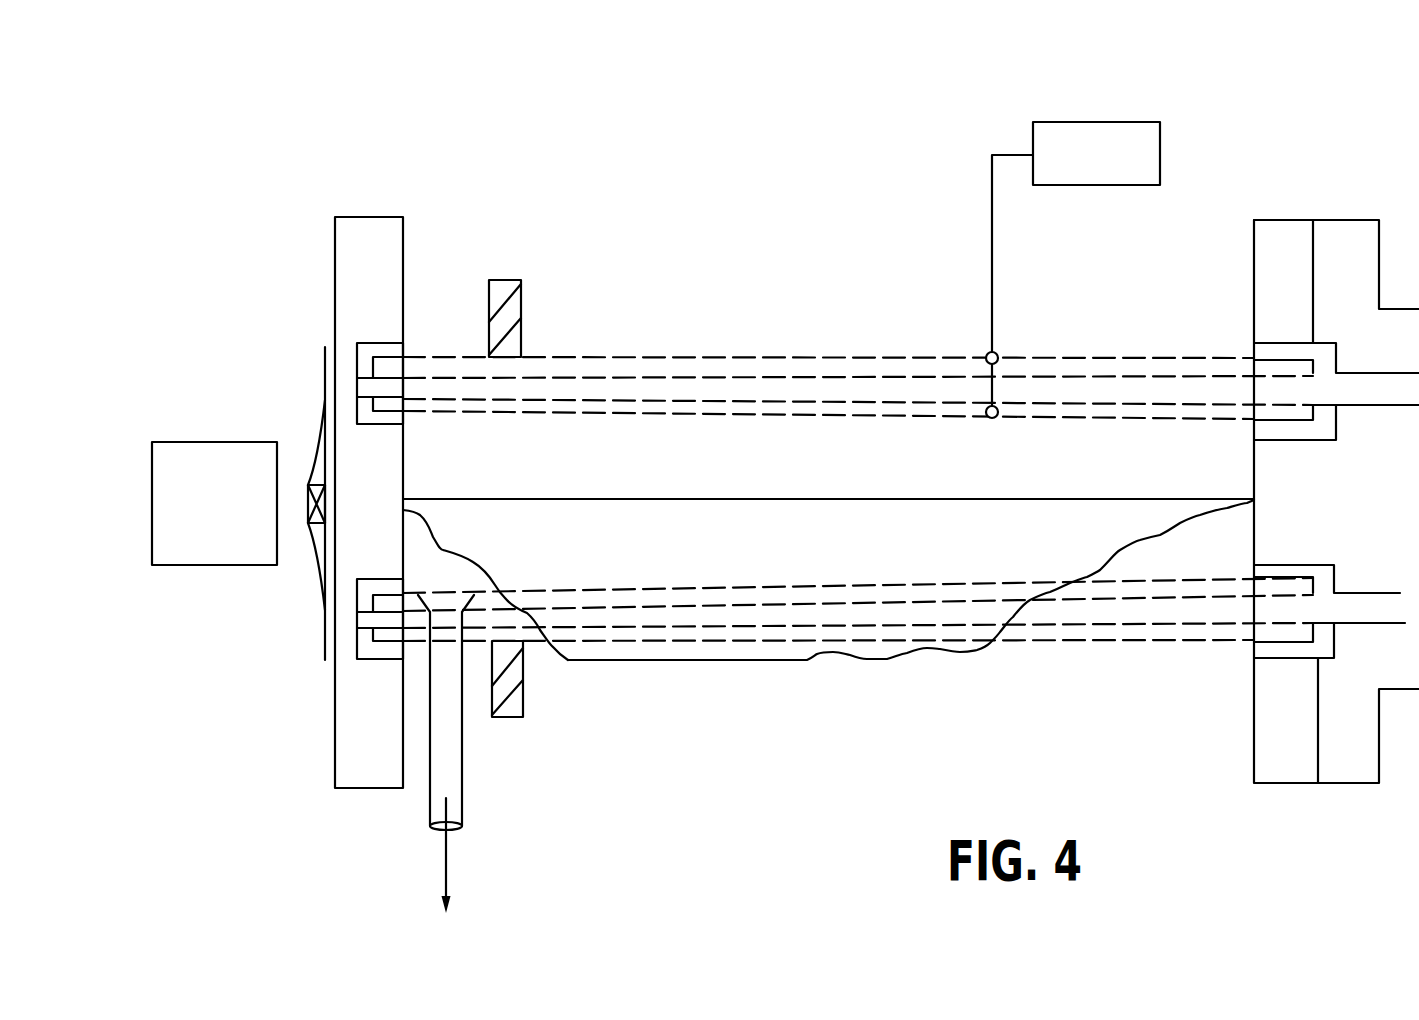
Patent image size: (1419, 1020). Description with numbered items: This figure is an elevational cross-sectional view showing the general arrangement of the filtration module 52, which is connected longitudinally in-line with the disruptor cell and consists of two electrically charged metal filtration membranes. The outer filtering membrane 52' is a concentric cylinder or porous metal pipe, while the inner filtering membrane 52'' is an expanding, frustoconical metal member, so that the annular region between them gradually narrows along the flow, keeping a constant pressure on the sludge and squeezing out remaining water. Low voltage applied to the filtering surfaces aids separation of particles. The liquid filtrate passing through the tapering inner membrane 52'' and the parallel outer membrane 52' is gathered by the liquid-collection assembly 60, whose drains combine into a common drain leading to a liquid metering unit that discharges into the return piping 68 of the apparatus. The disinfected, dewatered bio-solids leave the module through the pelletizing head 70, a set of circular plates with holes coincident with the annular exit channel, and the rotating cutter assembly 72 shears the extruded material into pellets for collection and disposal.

The filtration module 52 is at (1031, 238).
The outer filtering membrane 52' is at (858, 339).
The inner filtering membrane 52'' is at (858, 360).
The liquid-collection assembly 60 is at (663, 555).
The return piping 68 is at (463, 812).
The pelletizing head 70 is at (403, 217).
The rotating cutter assembly 72 is at (223, 433).